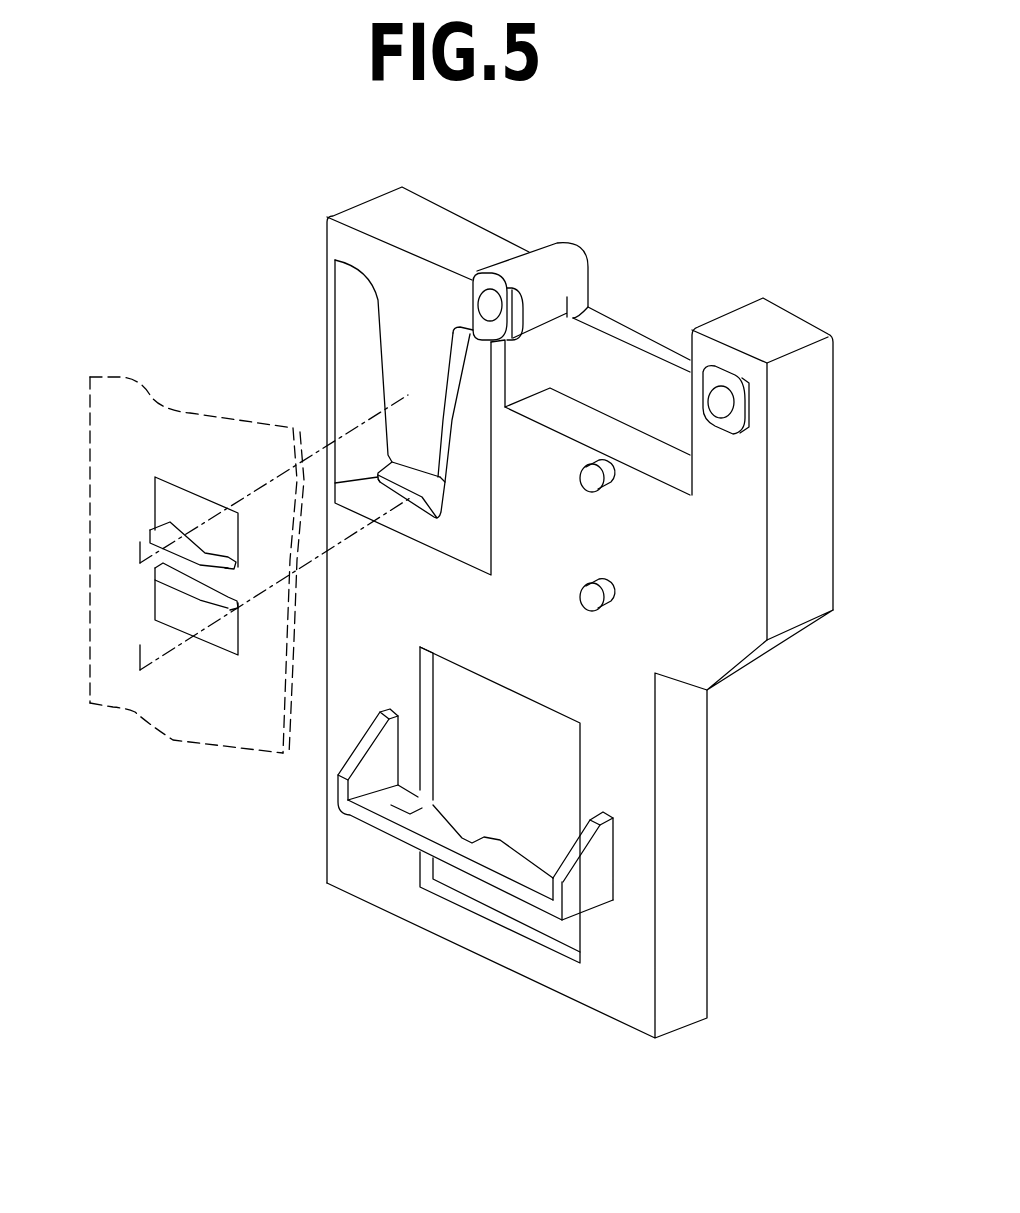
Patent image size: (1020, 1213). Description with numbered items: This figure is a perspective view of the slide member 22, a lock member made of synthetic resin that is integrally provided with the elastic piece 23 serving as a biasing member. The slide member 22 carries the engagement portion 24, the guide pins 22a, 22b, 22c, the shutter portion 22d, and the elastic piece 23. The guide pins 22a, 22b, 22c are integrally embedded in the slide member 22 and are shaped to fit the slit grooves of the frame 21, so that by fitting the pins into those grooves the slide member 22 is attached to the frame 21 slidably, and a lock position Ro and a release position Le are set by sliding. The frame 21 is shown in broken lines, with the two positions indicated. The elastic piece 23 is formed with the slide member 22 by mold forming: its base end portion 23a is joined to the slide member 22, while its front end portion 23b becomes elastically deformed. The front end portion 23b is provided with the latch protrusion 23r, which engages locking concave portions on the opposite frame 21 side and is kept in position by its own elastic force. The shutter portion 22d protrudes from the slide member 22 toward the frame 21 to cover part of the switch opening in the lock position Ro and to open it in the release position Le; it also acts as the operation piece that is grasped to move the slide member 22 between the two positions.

The frame 21 is at (118, 405).
The slide member 22 is at (620, 233).
The guide pin 22a is at (490, 303).
The guide pin 22b is at (720, 397).
The guide pin 22c is at (610, 484).
The shutter portion 22d is at (395, 837).
The elastic piece 23 is at (397, 383).
The base end portion 23a is at (411, 306).
The front end portion 23b is at (444, 484).
The latch protrusion 23r is at (410, 498).
The engagement portion 24 is at (613, 383).